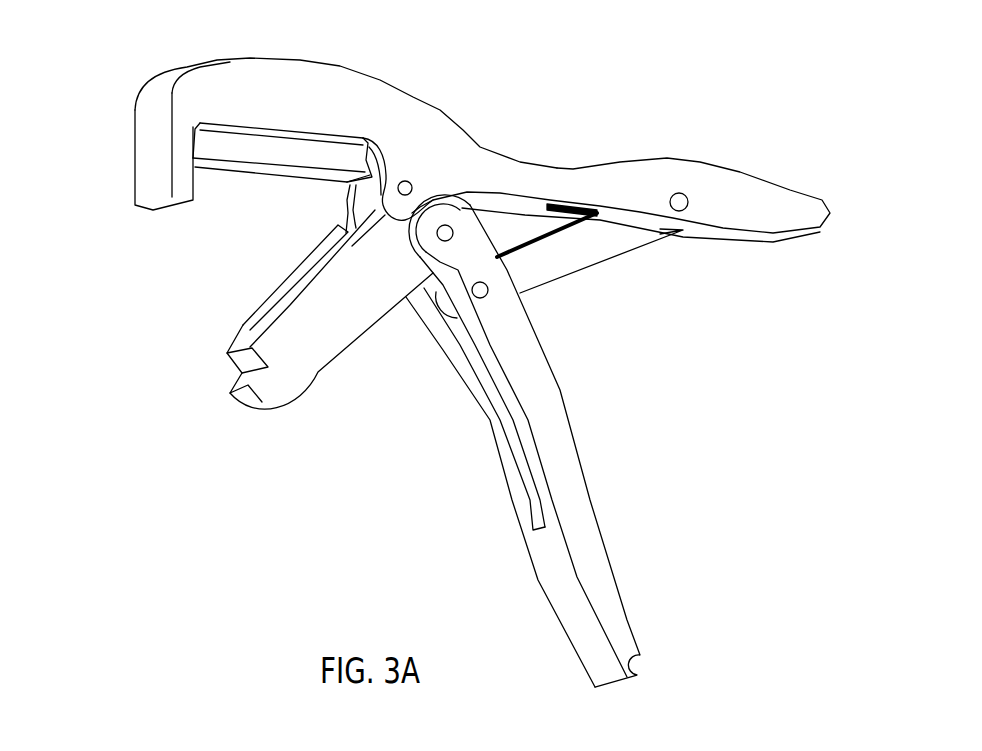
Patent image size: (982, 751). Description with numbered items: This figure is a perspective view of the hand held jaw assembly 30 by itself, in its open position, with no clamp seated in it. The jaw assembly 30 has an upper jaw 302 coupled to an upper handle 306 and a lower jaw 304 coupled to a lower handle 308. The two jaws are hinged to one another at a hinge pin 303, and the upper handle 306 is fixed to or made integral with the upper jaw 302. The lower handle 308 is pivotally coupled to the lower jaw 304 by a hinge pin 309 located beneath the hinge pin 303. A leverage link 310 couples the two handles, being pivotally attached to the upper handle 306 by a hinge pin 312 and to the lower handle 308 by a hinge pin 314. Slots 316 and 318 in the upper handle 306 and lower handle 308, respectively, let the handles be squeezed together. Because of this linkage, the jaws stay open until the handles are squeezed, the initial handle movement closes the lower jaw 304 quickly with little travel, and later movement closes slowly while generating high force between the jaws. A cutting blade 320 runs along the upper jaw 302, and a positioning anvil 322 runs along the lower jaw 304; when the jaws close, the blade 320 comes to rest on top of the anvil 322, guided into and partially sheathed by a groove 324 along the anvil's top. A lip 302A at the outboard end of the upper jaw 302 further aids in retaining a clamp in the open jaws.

The jaw assembly 30 is at (727, 391).
The upper jaw 302 is at (310, 87).
The lip 302A is at (155, 177).
The hinge pin 303 is at (408, 181).
The lower jaw 304 is at (312, 357).
The upper handle 306 is at (677, 175).
The lower handle 308 is at (528, 378).
The hinge pin 309 is at (449, 225).
The leverage link 310 is at (582, 247).
The hinge pin 312 is at (685, 209).
The hinge pin 314 is at (488, 293).
The slot 316 is at (565, 205).
The slot 318 is at (515, 435).
The cutting blade 320 is at (305, 158).
The positioning anvil 322 is at (243, 333).
The groove 324 is at (277, 288).